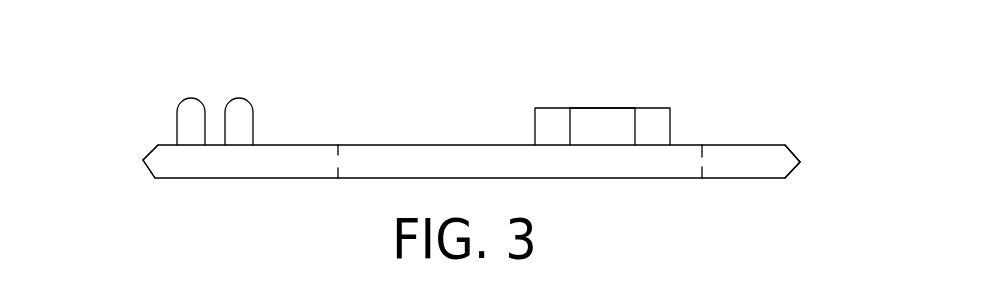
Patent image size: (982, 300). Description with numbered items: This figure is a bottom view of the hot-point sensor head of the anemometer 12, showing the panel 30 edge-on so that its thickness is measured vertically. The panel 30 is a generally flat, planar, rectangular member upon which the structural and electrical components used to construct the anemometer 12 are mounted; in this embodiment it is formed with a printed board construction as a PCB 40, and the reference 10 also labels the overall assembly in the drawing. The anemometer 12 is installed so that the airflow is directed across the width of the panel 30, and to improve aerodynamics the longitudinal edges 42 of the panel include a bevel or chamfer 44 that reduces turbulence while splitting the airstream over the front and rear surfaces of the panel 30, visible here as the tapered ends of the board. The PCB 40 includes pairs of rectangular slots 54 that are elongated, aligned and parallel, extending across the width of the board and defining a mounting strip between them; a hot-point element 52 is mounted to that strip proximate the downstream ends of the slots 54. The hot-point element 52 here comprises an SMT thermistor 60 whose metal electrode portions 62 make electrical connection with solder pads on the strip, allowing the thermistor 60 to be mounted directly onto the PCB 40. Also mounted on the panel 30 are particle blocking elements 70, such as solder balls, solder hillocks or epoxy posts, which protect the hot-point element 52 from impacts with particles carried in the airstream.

The wearable device 10 is at (477, 152).
The anemometer 12 is at (194, 204).
The panel 30 is at (471, 117).
The printed circuit board 40 is at (413, 153).
The longitudinal edges 42 is at (150, 158).
The chamfer 44 is at (152, 156).
The hot-point element 52 is at (613, 120).
The rectangular slots 54 is at (700, 163).
The SMT thermistor 60 is at (614, 118).
The metal electrode portions 62 is at (553, 118).
The particle blocking elements 70 is at (240, 101).